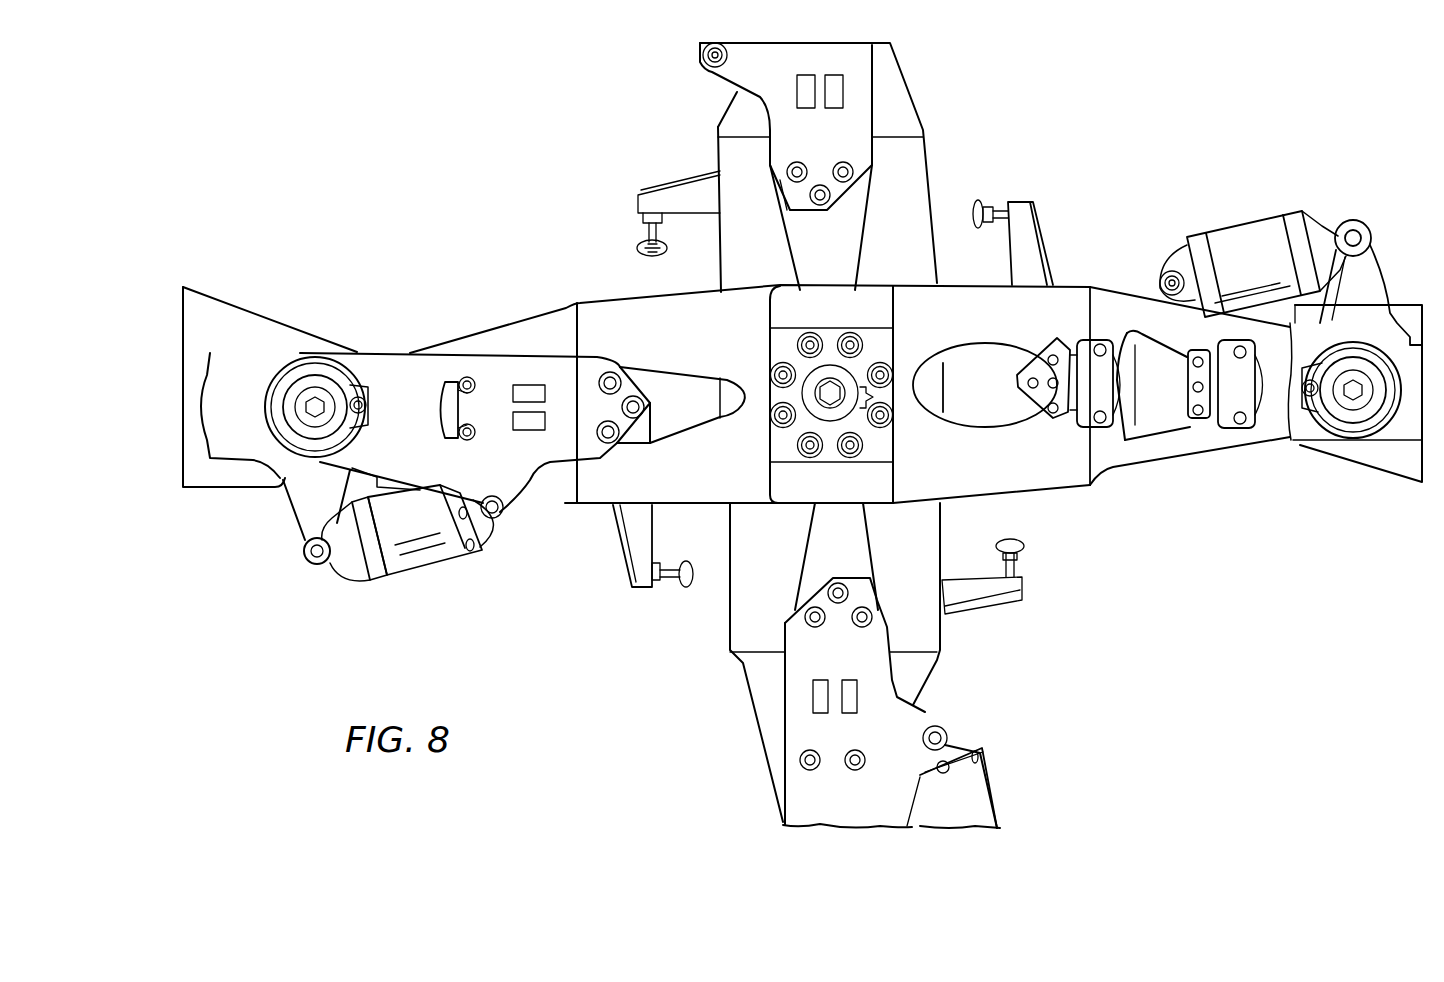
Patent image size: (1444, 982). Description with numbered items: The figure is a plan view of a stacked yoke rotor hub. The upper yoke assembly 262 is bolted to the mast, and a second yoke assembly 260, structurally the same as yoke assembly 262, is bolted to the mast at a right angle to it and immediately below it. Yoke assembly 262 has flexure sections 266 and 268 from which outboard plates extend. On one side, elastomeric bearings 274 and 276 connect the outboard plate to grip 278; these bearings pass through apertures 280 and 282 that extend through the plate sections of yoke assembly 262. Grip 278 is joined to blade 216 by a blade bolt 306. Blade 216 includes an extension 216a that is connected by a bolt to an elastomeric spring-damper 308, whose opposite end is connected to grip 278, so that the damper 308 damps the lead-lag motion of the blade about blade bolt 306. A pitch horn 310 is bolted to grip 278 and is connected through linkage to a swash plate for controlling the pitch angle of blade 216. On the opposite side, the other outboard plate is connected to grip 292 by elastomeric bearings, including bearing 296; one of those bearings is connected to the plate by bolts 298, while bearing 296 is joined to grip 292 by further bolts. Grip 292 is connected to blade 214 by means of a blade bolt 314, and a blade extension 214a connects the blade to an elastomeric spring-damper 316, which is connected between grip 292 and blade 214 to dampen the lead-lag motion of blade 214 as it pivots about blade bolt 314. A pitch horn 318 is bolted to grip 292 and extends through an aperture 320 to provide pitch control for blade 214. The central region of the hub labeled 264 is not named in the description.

The blade 214 is at (240, 320).
The blade extension 214a is at (318, 498).
The blade 216 is at (1382, 454).
The blade extension 216a is at (1364, 266).
The yoke assembly 260 is at (948, 181).
The yoke assembly 262 is at (490, 318).
The center mounting plate bolts 264 is at (878, 362).
The flexure section 266 is at (929, 312).
The flexure section 268 is at (665, 313).
The elastomeric bearing 274 is at (1071, 408).
The elastomeric bearing 276 is at (1204, 421).
The grip 278 is at (1297, 428).
The aperture 280 is at (960, 370).
The aperture 282 is at (1140, 333).
The grip 292 is at (388, 383).
The elastomeric bearing 296 is at (451, 416).
The bolts 298 is at (603, 432).
The blade bolt 306 is at (1353, 374).
The elastomeric spring-damper 308 is at (1241, 243).
The pitch horn 310 is at (1027, 235).
The blade bolt 314 is at (318, 402).
The elastomeric spring-damper 316 is at (403, 545).
The pitch horn 318 is at (637, 559).
The aperture 320 is at (663, 388).